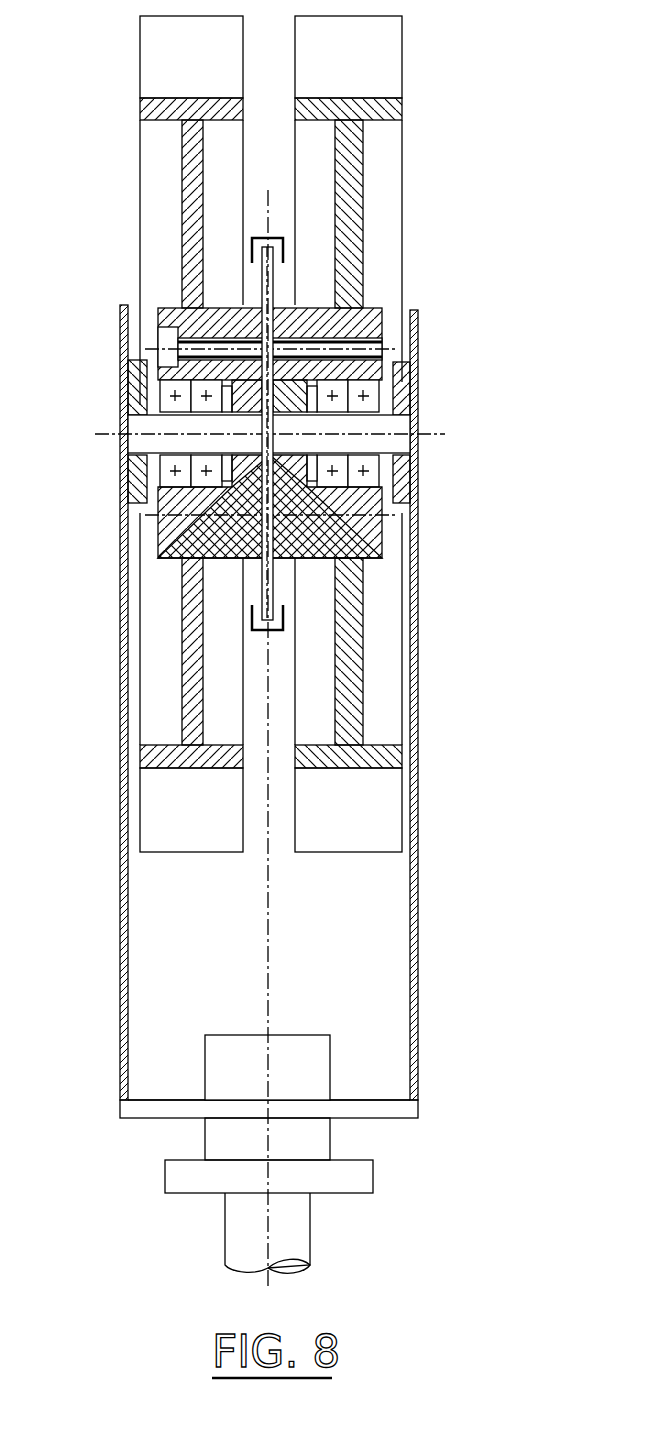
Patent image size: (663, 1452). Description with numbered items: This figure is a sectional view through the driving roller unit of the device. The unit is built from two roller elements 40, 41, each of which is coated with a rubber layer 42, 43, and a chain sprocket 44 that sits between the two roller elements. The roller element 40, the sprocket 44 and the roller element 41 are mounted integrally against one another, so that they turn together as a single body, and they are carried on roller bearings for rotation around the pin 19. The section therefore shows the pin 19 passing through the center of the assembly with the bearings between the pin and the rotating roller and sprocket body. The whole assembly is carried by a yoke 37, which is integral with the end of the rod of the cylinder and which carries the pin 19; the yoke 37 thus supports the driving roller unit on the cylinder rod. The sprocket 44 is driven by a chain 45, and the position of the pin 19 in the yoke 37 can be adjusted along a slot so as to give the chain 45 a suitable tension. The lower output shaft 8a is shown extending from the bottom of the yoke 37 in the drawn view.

The output shaft 8a is at (297, 1228).
The pin 19 is at (402, 428).
The yoke 37 is at (416, 960).
The roller element 40 is at (185, 225).
The roller element 41 is at (350, 242).
The rubber layer 42 is at (155, 60).
The rubber layer 43 is at (388, 50).
The chain sprocket 44 is at (273, 292).
The chain 45 is at (272, 240).